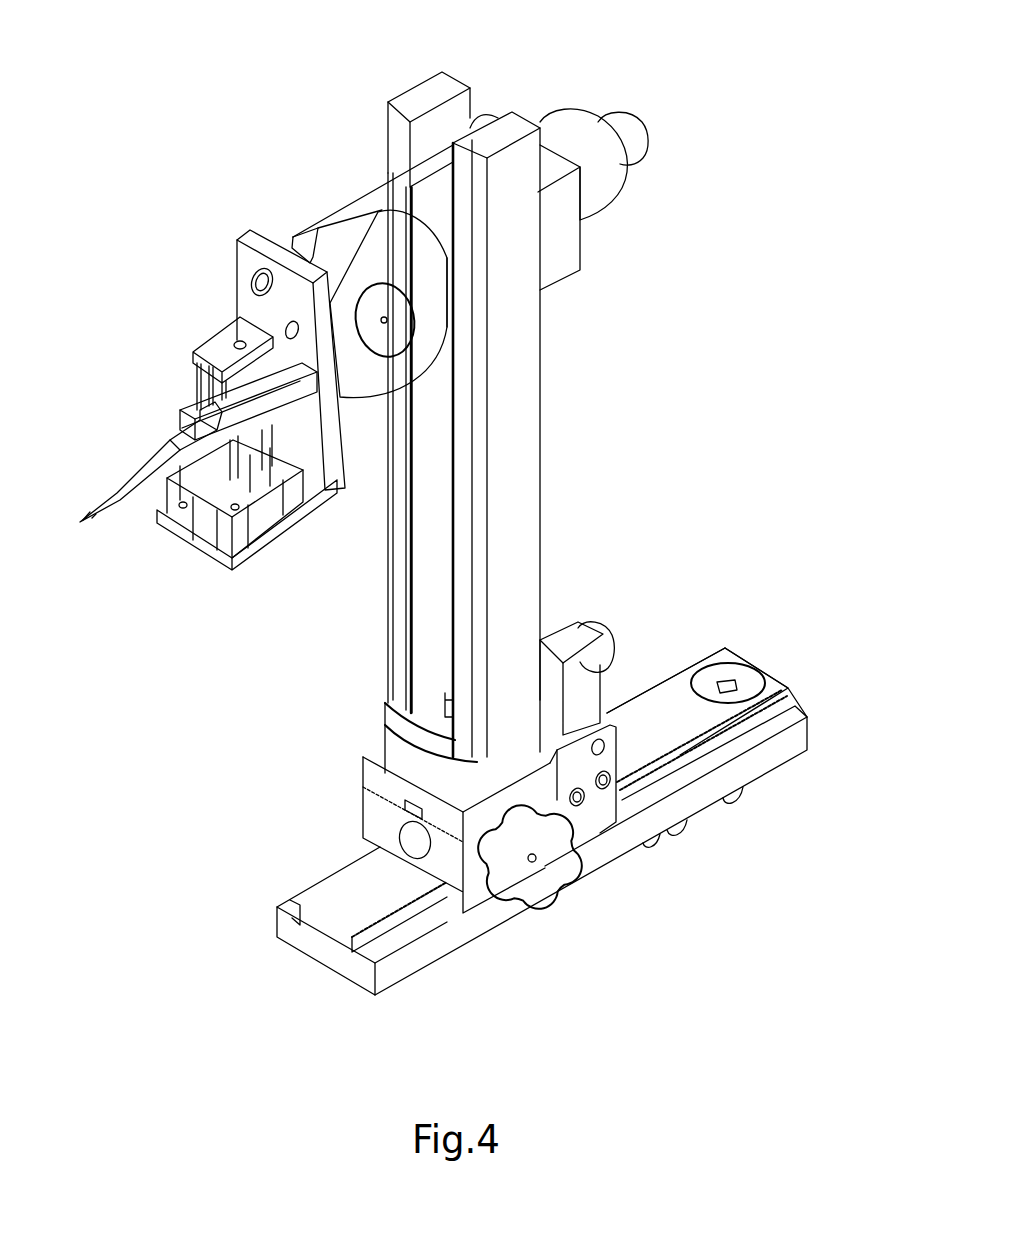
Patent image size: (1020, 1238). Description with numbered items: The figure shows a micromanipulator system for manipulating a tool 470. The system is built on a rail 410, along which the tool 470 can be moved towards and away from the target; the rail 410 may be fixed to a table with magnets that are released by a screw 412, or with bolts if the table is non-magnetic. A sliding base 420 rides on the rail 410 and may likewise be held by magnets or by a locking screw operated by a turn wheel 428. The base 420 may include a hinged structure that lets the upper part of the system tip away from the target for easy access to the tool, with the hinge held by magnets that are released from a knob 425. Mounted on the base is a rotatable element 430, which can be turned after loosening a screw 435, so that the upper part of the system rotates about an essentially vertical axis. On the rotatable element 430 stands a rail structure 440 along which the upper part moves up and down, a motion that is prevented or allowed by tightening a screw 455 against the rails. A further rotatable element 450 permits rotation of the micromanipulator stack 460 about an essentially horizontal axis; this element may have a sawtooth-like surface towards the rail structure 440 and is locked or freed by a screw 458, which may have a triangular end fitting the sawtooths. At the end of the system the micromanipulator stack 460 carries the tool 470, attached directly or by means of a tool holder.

The rail 410 is at (766, 752).
The screw 412 is at (737, 683).
The sliding base 420 is at (588, 778).
The knob 425 is at (413, 842).
The turn wheel 428 is at (536, 864).
The rotatable element 430 is at (403, 743).
The screw 435 is at (594, 643).
The rail structure 440 is at (430, 492).
The rotatable element 450 is at (320, 220).
The screw 455 is at (574, 122).
The screw 458 is at (625, 133).
The micromanipulator stack 460 is at (203, 336).
The tool 470 is at (133, 470).